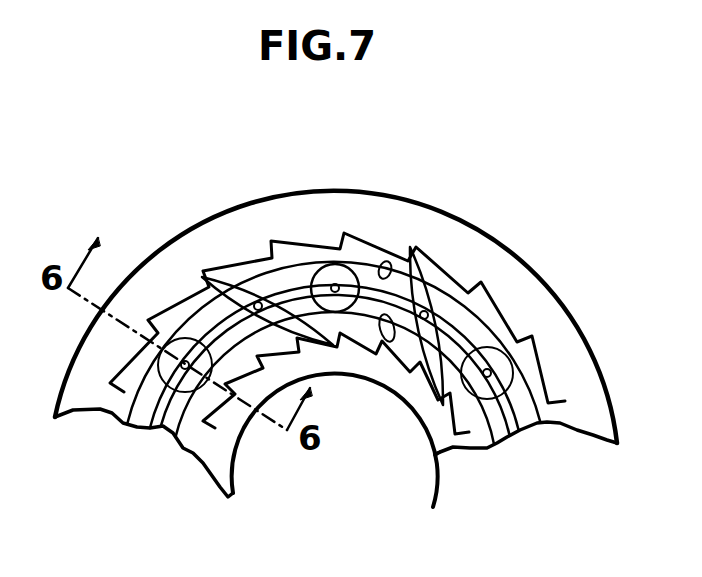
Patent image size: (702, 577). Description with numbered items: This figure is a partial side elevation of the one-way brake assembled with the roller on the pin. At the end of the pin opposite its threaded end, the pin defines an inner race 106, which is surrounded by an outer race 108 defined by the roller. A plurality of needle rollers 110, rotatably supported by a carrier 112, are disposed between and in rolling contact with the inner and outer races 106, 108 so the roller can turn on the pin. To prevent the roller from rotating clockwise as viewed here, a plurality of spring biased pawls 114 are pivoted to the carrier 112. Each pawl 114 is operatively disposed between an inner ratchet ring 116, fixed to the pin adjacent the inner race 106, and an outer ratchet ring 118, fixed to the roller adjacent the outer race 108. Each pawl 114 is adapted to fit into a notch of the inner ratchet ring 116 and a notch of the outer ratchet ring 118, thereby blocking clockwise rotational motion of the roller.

The inner race 106 is at (393, 320).
The outer race 108 is at (377, 270).
The needle rollers 110 is at (187, 337).
The carrier 112 is at (463, 340).
The spring biased pawls 114 is at (253, 297).
The inner ratchet ring 116 is at (440, 433).
The outer ratchet ring 118 is at (498, 260).